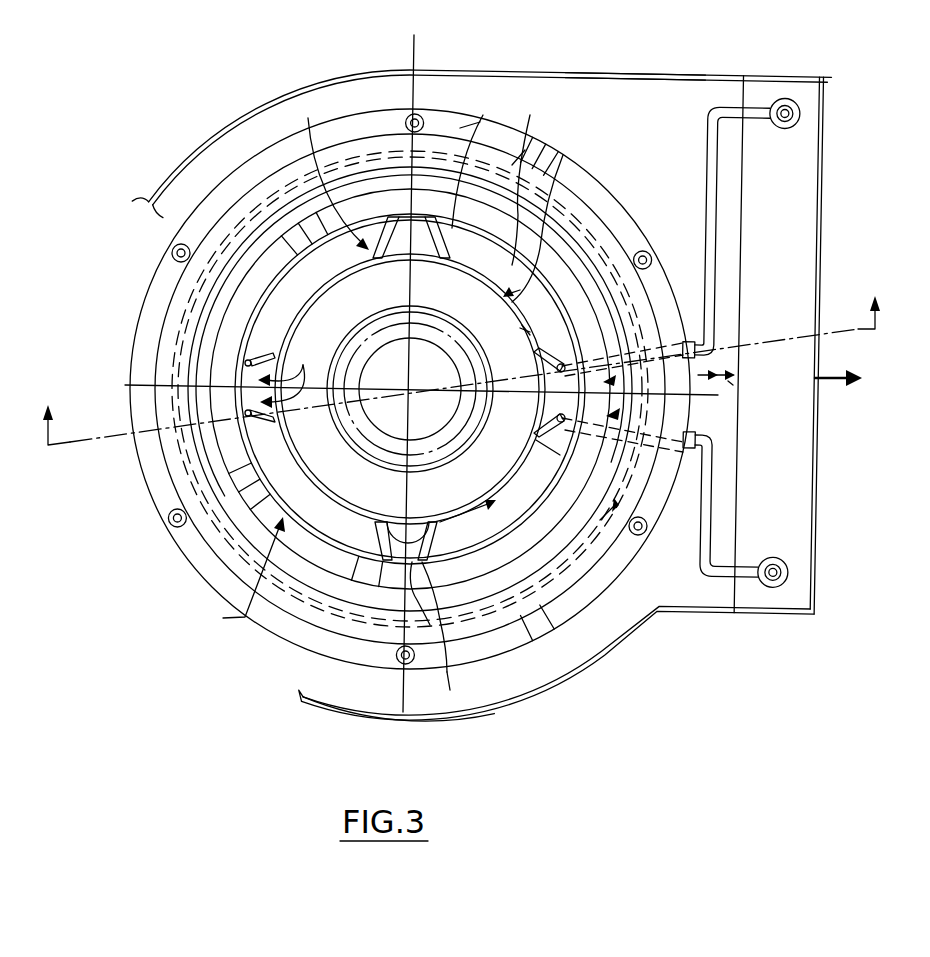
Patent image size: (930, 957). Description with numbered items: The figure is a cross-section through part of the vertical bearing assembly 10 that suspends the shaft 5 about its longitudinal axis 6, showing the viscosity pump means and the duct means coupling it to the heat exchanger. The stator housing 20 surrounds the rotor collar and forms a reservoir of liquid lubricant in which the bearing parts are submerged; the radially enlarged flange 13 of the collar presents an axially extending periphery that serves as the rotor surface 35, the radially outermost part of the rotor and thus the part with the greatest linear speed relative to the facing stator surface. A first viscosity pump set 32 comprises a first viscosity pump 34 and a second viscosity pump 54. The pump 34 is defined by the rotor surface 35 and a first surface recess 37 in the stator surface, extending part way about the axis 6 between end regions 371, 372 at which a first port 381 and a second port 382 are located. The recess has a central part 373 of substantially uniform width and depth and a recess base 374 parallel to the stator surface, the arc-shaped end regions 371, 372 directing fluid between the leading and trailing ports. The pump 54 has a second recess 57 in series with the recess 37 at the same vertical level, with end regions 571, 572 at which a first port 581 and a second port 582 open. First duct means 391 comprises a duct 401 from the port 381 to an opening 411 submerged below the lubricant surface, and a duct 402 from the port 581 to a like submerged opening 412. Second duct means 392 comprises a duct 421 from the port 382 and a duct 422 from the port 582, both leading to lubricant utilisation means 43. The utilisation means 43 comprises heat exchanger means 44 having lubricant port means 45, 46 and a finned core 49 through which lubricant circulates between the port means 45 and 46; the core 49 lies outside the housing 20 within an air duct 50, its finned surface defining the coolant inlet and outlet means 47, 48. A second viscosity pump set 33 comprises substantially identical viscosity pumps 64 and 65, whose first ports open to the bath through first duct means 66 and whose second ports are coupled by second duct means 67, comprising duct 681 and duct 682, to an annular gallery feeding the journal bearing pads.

The shaft 5 is at (434, 423).
The longitudinal axis 6 is at (410, 389).
The vertical bearing assembly 10 is at (231, 102).
The flange 13 is at (333, 307).
The stator housing 20 is at (192, 285).
The first viscosity pump set 32 is at (610, 650).
The second viscosity pump set 33 is at (190, 562).
The first viscosity pump 34 is at (512, 165).
The rotor surface 35 is at (520, 328).
The first surface recess 37 is at (580, 163).
The end region 371 is at (452, 262).
The end region 372 is at (542, 362).
The central part 373 is at (522, 325).
The recess base 374 is at (505, 295).
The first port 381 is at (440, 262).
The second port 382 is at (543, 421).
The first duct means 391 is at (453, 252).
The second duct means 392 is at (710, 410).
The duct 401 is at (520, 140).
The duct 402 is at (445, 548).
The opening 411 is at (460, 128).
The opening 412 is at (447, 672).
The duct 421 is at (556, 360).
The duct 422 is at (550, 440).
The lubricant utilisation means 43 is at (692, 151).
The heat exchanger means 44 is at (743, 93).
The lubricant port means 45 is at (770, 125).
The lubricant port means 46 is at (759, 588).
The coolant inlet means 47 is at (728, 381).
The coolant outlet means 48 is at (838, 355).
The core 49 is at (787, 347).
The air duct 50 is at (572, 78).
The second viscosity pump 54 is at (577, 672).
The second recess 57 is at (470, 515).
The end region 571 is at (452, 518).
The end region 572 is at (536, 440).
The first port 581 is at (392, 522).
The second port 582 is at (535, 465).
The viscosity pump 64 is at (340, 547).
The viscosity pump 65 is at (265, 320).
The first duct means 66 is at (280, 366).
The second duct means 67 is at (289, 374).
The duct 681 is at (245, 420).
The duct 682 is at (240, 360).